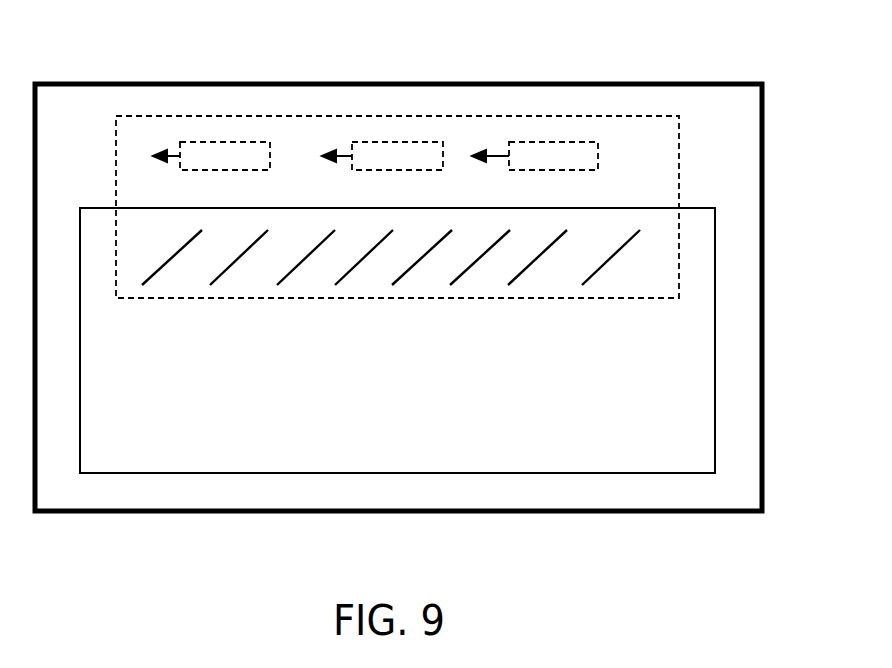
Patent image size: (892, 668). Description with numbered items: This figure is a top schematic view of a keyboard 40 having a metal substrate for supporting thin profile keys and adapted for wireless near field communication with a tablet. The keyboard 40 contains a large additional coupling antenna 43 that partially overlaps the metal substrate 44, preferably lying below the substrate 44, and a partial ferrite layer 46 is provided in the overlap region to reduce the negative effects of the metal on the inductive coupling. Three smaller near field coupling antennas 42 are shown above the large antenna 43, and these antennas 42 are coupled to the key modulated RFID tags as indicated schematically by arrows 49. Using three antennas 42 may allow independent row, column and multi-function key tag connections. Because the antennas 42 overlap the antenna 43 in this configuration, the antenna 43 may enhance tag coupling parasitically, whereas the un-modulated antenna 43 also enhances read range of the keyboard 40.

The keyboard 40 is at (763, 191).
The near field coupling antenna 42 is at (211, 142).
The additional coupling antenna 43 is at (640, 116).
The metal substrate 44 is at (717, 327).
The ferrite layer 46 is at (653, 265).
The arrows 49 is at (172, 152).